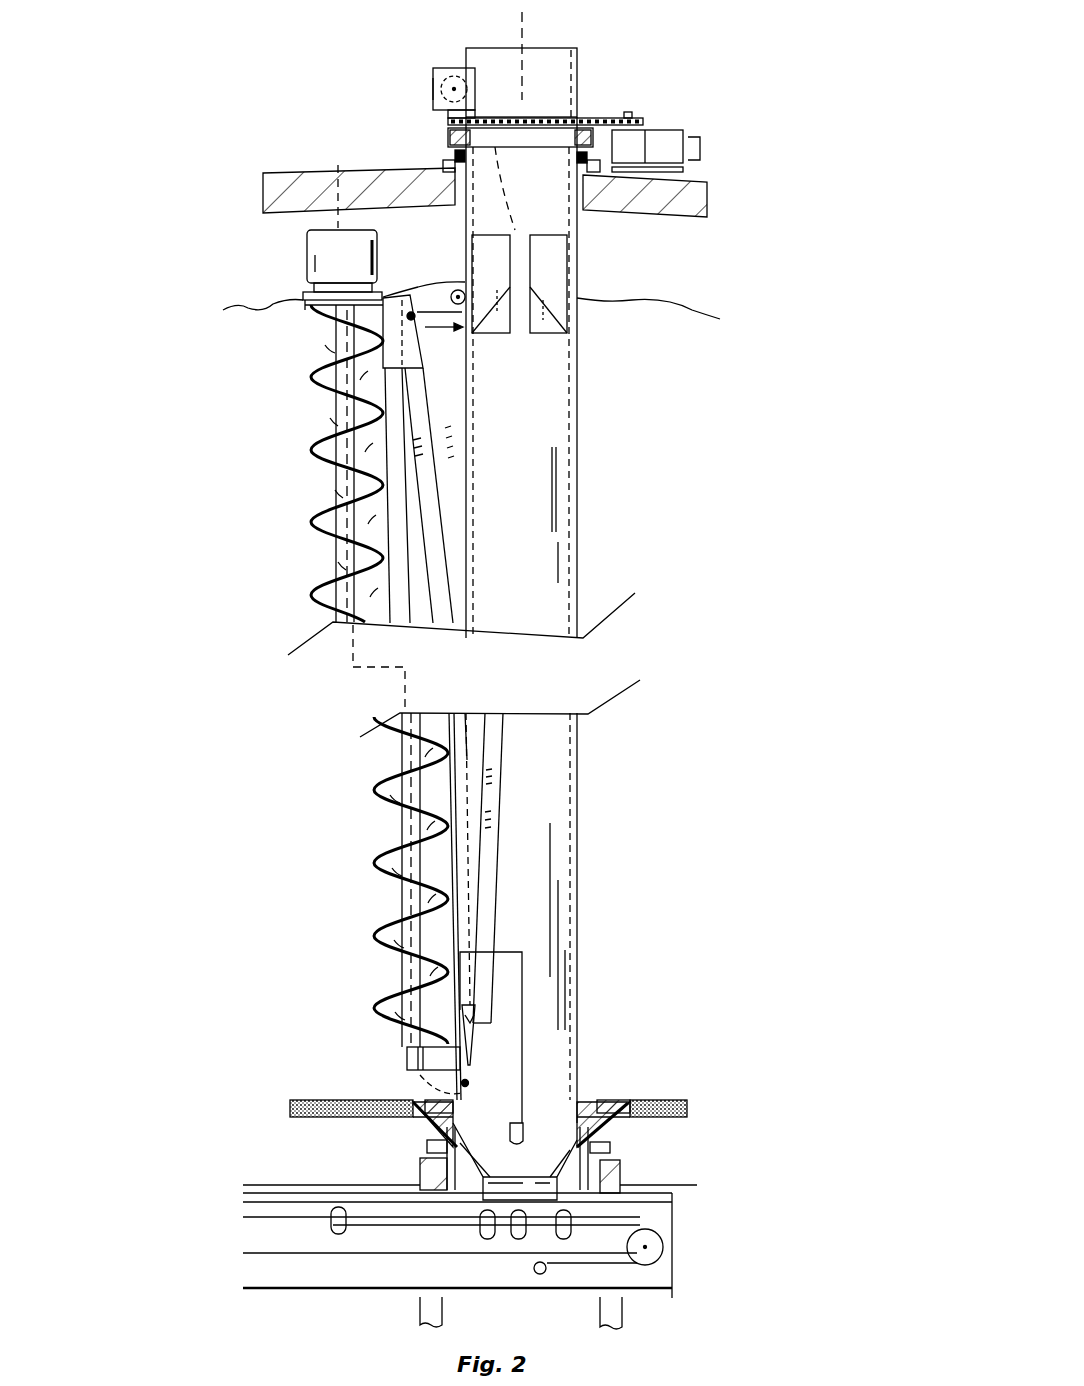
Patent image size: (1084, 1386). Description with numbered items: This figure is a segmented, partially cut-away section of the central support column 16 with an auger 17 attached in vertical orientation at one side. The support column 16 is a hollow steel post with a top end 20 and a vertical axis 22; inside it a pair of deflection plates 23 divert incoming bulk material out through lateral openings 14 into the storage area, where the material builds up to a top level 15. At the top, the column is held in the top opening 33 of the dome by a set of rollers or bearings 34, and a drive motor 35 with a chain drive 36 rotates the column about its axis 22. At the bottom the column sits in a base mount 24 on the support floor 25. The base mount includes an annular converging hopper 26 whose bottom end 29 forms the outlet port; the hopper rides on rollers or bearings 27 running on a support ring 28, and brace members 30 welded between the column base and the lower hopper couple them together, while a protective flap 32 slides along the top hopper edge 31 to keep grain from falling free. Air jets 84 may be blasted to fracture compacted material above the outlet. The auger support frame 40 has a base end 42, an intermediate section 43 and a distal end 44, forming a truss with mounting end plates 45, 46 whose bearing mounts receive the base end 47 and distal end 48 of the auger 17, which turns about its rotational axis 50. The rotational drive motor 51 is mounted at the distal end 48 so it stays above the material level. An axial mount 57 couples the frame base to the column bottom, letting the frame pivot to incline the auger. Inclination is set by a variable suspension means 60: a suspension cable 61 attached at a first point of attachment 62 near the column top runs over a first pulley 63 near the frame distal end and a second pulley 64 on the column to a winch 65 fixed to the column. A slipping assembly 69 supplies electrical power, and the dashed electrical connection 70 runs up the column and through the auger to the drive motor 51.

The lateral openings 14 is at (488, 252).
The top level 15 is at (255, 300).
The support column 16 is at (563, 77).
The auger 17 is at (313, 530).
The top end 20 is at (530, 195).
The vertical axis 22 is at (526, 50).
The deflection plates 23 is at (510, 308).
The base mount 24 is at (627, 1147).
The support floor 25 is at (687, 1108).
The channeling hopper 26 is at (437, 1117).
The rollers or bearings 27 is at (423, 1153).
The support ring 28 is at (620, 1170).
The bottom end 29 is at (672, 1213).
The brace members 30 is at (458, 1117).
The top hopper edge 31 is at (627, 1110).
The protective flap 32 is at (422, 1085).
The top opening 33 is at (583, 167).
The rollers or bearings 34 is at (450, 152).
The drive motor 35 is at (663, 129).
The chain drive 36 is at (607, 117).
The auger support frame 40 is at (447, 560).
The base end 42 is at (465, 1012).
The intermediate section 43 is at (495, 730).
The distal end 44 is at (440, 370).
The mounting end plate 45 is at (408, 1057).
The mounting end plate 46 is at (310, 305).
The base end 47 is at (410, 1030).
The distal end 48 is at (312, 308).
The rotational axis 50 is at (439, 663).
The rotational drive motor 51 is at (317, 252).
The axial mount 57 is at (472, 1040).
The variable suspension means 60 is at (428, 72).
The suspension cable 61 is at (407, 350).
The first point of attachment 62 is at (462, 333).
The first pulley 63 is at (412, 313).
The second pulley 64 is at (457, 290).
The winch 65 is at (450, 68).
The slipping assembly 69 is at (447, 133).
The electrical connection 70 is at (510, 172).
The air jets 84 is at (577, 1065).